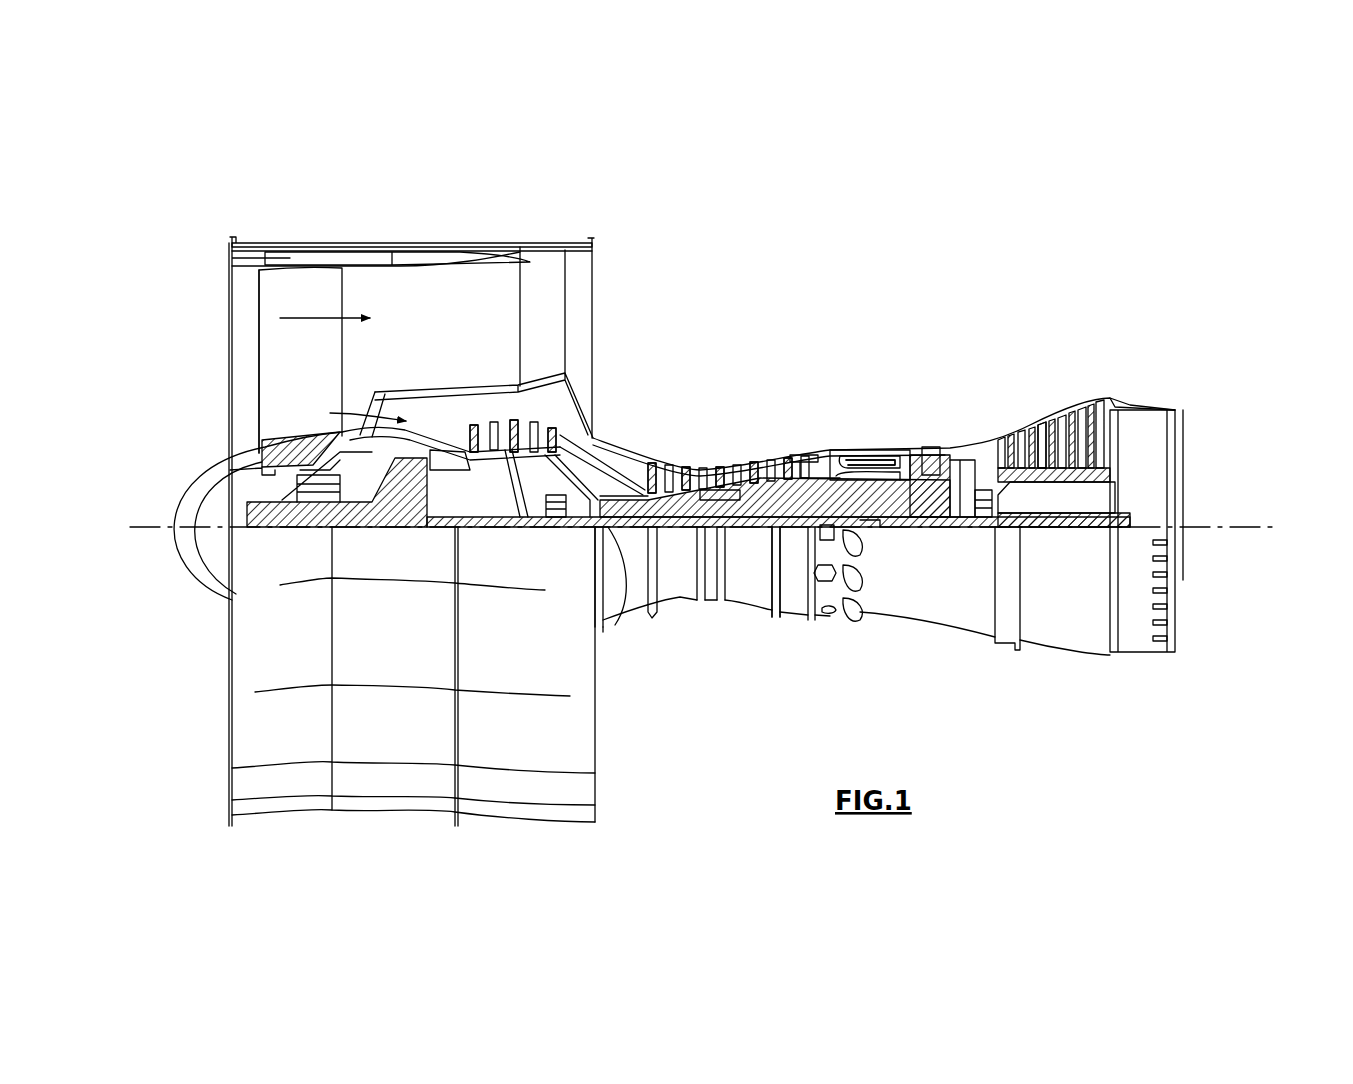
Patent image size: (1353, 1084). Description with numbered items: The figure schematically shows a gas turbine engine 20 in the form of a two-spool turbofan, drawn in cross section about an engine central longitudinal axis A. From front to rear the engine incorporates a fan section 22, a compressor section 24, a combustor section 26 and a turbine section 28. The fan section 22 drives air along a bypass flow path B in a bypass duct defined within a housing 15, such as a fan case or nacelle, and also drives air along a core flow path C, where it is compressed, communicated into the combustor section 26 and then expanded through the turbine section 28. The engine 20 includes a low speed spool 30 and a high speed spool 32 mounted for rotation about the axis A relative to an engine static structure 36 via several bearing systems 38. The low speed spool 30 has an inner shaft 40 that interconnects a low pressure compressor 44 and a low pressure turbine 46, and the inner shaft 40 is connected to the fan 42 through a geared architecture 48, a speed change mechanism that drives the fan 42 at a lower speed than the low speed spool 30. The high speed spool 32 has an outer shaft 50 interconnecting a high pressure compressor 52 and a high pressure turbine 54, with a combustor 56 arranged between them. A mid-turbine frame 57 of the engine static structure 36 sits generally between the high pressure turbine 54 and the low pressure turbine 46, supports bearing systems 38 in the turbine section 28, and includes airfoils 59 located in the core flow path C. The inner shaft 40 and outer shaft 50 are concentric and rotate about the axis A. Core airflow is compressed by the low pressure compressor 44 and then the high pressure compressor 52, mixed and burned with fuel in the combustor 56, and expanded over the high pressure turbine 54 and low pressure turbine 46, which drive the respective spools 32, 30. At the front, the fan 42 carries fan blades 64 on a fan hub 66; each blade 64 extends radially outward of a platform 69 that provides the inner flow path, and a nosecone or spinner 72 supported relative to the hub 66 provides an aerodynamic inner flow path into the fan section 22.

The housing 15 is at (412, 248).
The gas turbine engine 20 is at (875, 290).
The fan section 22 is at (350, 235).
The compressor section 24 is at (648, 428).
The combustor section 26 is at (868, 418).
The turbine section 28 is at (1012, 385).
The low speed spool 30 is at (752, 540).
The high speed spool 32 is at (797, 456).
The engine static structure 36 is at (790, 625).
The bearing systems 38 is at (555, 520).
The inner shaft 40 is at (623, 607).
The fan 42 is at (300, 360).
The low pressure compressor 44 is at (465, 450).
The low pressure turbine 46 is at (1060, 420).
The geared architecture 48 is at (418, 508).
The outer shaft 50 is at (878, 518).
The high pressure compressor 52 is at (725, 500).
The high pressure turbine 54 is at (935, 446).
The combustor 56 is at (870, 470).
The mid-turbine frame 57 is at (975, 430).
The airfoils 59 is at (1012, 497).
The fan blades 64 is at (259, 375).
The fan hub 66 is at (255, 470).
The platform 69 is at (285, 458).
The nosecone or spinner 72 is at (186, 510).
The engine central longitudinal axis A is at (1276, 527).
The bypass flow path B is at (318, 318).
The core flow path C is at (348, 409).